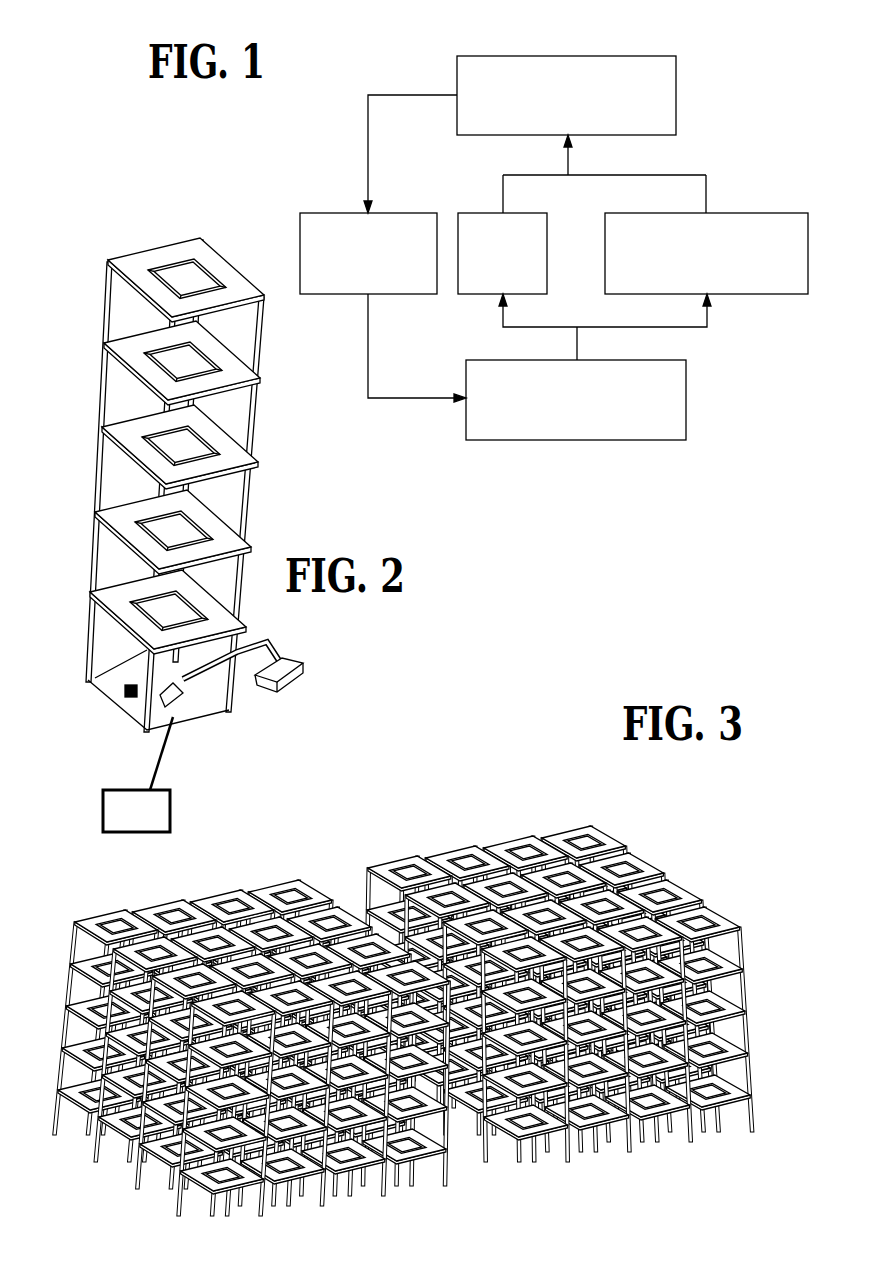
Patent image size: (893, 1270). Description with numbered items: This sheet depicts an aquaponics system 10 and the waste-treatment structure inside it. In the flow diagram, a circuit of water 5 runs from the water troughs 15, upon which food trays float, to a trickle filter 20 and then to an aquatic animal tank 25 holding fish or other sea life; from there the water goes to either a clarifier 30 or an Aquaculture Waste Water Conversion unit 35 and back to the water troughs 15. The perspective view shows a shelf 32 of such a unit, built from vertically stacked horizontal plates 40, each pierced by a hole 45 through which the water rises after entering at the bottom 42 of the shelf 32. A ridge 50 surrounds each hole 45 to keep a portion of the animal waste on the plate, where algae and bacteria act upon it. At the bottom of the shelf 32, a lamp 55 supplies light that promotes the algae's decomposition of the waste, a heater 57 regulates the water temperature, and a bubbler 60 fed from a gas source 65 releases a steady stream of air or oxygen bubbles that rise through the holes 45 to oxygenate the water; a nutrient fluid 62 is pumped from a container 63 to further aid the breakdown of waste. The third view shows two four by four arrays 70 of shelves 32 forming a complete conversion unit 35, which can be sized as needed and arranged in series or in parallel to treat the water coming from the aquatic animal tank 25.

In FIG. 1, the circuit of water 5 is at (683, 174).
In FIG. 1, the aquaponics system 10 is at (554, 270).
In FIG. 1, the water troughs 15 is at (676, 82).
In FIG. 1, the trickle filter 20 is at (387, 212).
In FIG. 1, the aquatic animal tank 25 is at (613, 440).
In FIG. 1, the clarifier 30 is at (490, 212).
In FIG. 1, the Aquaculture Waste Water Conversion (AWWC) unit 35 is at (743, 212).
In FIG. 2, the shelf 32 is at (210, 488).
In FIG. 2, the horizontal plates 40 is at (256, 378).
In FIG. 2, the bottom 42 is at (115, 653).
In FIG. 2, the holes 45 is at (178, 273).
In FIG. 2, the ridge 50 is at (210, 533).
In FIG. 2, the lamp 55 is at (178, 697).
In FIG. 2, the heater 57 is at (123, 700).
In FIG. 2, the bubbler 60 is at (190, 680).
In FIG. 2, the nutrient fluid 62 is at (155, 765).
In FIG. 2, the container 63 is at (118, 813).
In FIG. 2, the gas source 65 is at (305, 670).
In FIG. 3, the arrays 70 is at (313, 893).